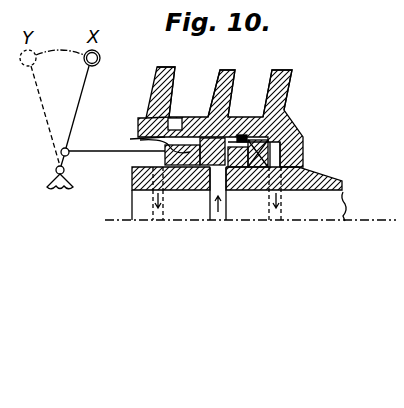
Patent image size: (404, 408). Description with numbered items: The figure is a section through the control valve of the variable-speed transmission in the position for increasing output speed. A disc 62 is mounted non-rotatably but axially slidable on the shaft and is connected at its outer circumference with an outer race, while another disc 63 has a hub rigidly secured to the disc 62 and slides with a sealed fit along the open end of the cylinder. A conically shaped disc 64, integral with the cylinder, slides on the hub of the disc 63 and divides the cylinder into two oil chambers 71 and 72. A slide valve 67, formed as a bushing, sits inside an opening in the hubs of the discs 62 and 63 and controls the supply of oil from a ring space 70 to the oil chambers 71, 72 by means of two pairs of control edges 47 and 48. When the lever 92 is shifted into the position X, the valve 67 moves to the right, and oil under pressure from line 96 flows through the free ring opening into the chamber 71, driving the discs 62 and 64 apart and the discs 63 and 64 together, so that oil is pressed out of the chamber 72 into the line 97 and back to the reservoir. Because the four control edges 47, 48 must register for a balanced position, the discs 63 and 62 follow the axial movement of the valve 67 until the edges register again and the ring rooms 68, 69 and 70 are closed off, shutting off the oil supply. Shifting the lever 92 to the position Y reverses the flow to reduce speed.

The control edges 47 is at (321, 124).
The control edges 48 is at (150, 157).
The disc 62 is at (237, 117).
The disc 63 is at (155, 80).
The conically shaped disc 64 is at (236, 74).
The slide valve 67 is at (258, 138).
The ring room 68 is at (106, 159).
The ring room 69 is at (303, 133).
The ring space 70 is at (248, 116).
The oil chamber 71 is at (255, 83).
The oil chamber 72 is at (190, 86).
The lever 92 is at (100, 55).
The line 96 is at (273, 177).
The line 97 is at (158, 220).